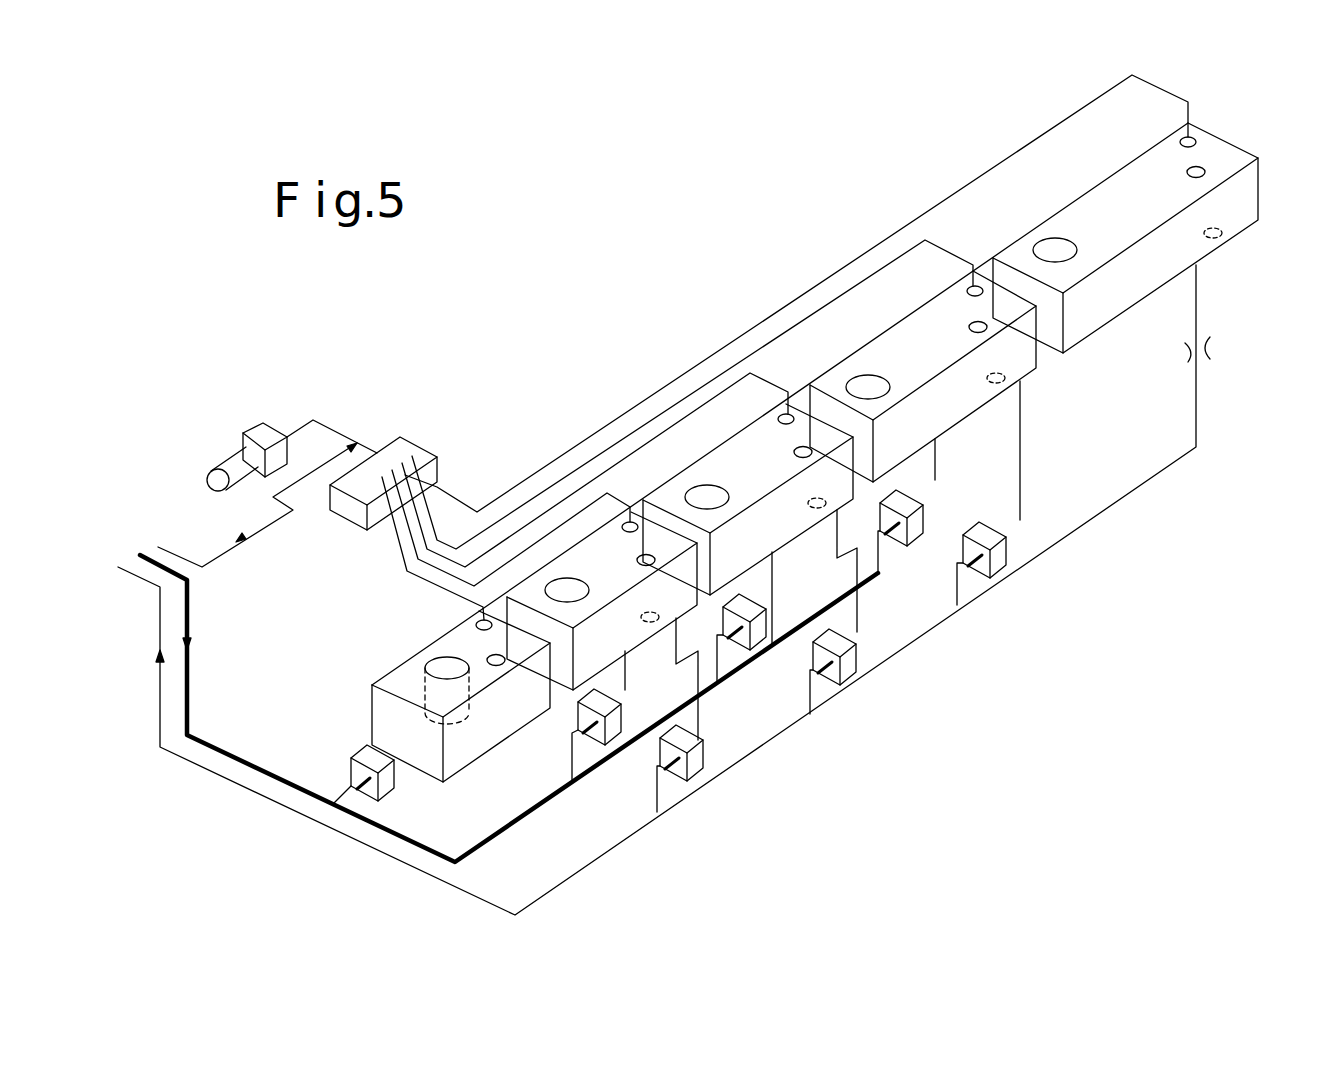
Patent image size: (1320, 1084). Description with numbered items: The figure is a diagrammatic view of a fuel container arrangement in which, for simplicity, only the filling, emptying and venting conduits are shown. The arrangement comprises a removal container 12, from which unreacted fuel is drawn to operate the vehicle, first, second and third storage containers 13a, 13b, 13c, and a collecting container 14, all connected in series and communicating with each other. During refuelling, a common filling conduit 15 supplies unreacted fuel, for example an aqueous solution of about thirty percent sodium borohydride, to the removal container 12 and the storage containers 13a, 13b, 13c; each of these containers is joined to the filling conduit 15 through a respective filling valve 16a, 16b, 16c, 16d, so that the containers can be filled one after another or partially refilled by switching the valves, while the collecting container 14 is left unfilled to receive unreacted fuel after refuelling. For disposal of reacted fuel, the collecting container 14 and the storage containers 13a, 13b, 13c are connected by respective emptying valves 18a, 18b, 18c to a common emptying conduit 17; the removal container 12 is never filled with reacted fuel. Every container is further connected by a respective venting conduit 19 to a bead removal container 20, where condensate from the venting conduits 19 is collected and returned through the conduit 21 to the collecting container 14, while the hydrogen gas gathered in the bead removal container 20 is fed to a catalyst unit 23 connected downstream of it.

The removal container 12 is at (463, 757).
The first storage container 13a is at (628, 640).
The second storage container 13b is at (775, 530).
The third storage container 13c is at (957, 410).
The collecting container 14 is at (1120, 302).
The filling conduit 15 is at (235, 758).
The filling valve 16a is at (377, 797).
The filling valve 16b is at (598, 757).
The filling valve 16c is at (740, 640).
The filling valve 16d is at (905, 538).
The emptying conduit 17 is at (182, 760).
The emptying valve 18a is at (703, 768).
The emptying valve 18b is at (856, 668).
The emptying valve 18c is at (1003, 562).
The venting conduit 19 is at (550, 533).
The bead removal container 20 is at (417, 450).
The conduit 21 is at (1158, 87).
The catalyst unit 23 is at (233, 462).